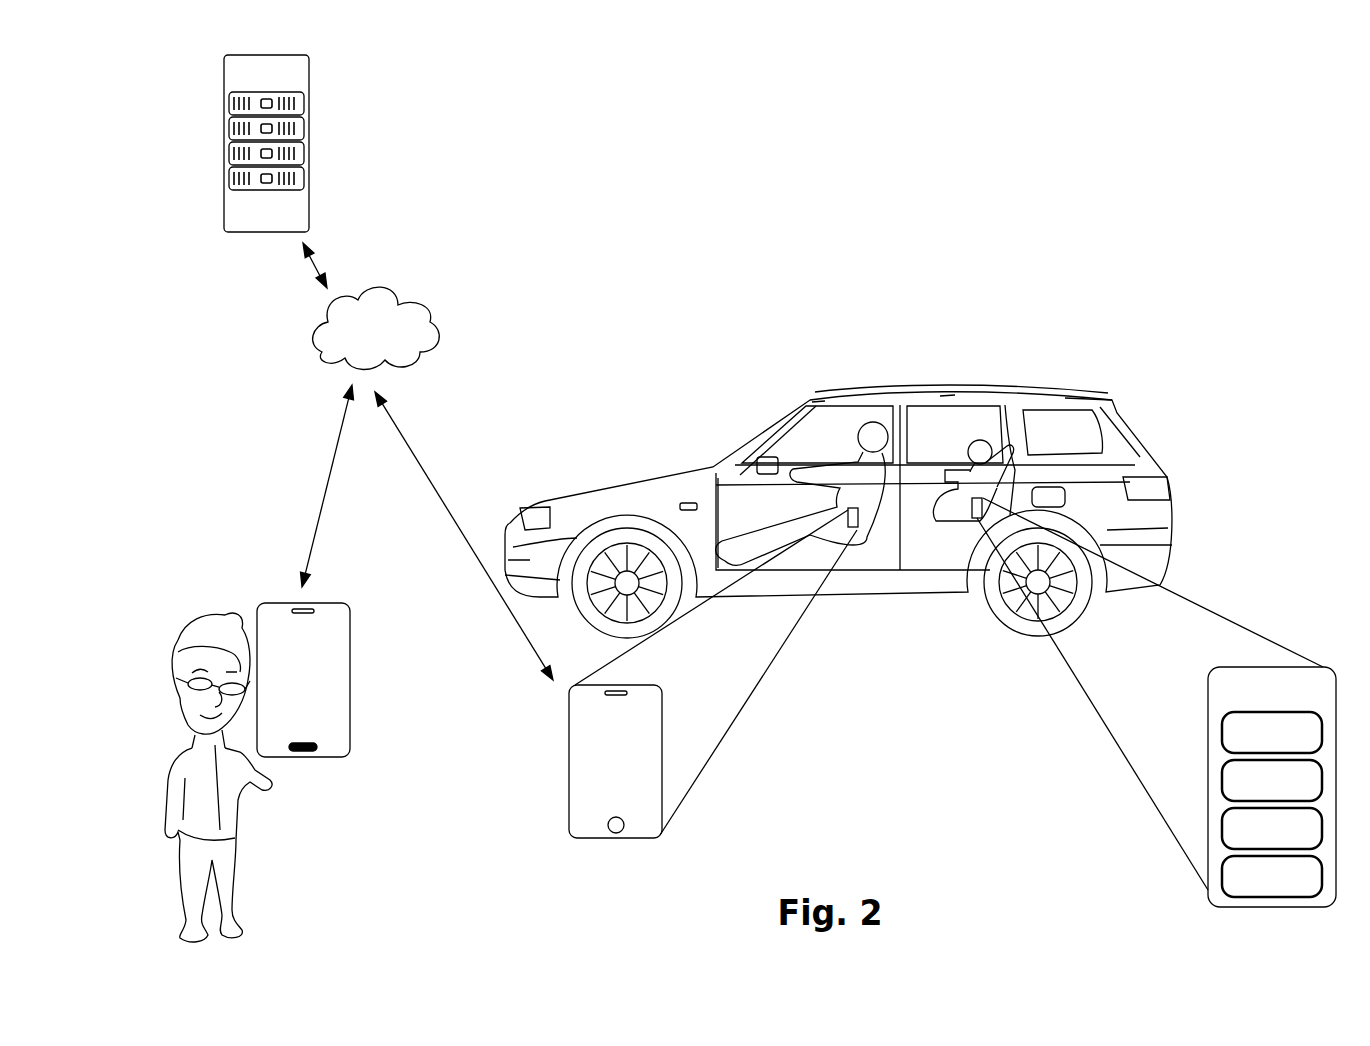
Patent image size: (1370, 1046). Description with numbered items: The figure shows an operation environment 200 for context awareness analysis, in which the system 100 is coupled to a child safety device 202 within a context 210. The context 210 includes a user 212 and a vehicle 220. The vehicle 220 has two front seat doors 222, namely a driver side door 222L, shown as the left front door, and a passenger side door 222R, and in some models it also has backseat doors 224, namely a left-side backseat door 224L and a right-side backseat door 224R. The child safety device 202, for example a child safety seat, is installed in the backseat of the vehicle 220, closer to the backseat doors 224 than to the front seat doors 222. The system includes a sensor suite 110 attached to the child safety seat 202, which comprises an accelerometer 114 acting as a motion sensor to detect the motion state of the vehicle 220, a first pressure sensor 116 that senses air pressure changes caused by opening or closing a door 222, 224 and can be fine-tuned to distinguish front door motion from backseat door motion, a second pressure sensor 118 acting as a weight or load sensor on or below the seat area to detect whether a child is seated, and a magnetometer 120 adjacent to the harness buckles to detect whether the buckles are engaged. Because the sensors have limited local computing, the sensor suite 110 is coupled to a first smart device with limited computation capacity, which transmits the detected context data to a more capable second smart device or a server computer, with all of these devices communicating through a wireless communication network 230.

The system 100 is at (525, 910).
The sensor suite 110 is at (1252, 701).
The accelerometer 114 is at (1255, 744).
The first pressure sensor 116 is at (1255, 792).
The second pressure sensor 118 is at (1255, 840).
The magnetometer 120 is at (1255, 887).
The operation environment 200 is at (1080, 148).
The child safety device 202 is at (943, 522).
The context 210 is at (660, 355).
The user 212 is at (844, 494).
The vehicle 220 is at (1137, 430).
The front seat doors 222 is at (842, 308).
The driver side door 222L is at (733, 507).
The passenger side door 222R is at (821, 400).
The backseat doors 224 is at (955, 298).
The left-side backseat door 224L is at (1015, 473).
The right-side backseat door 224R is at (947, 392).
The communication network 230 is at (351, 344).